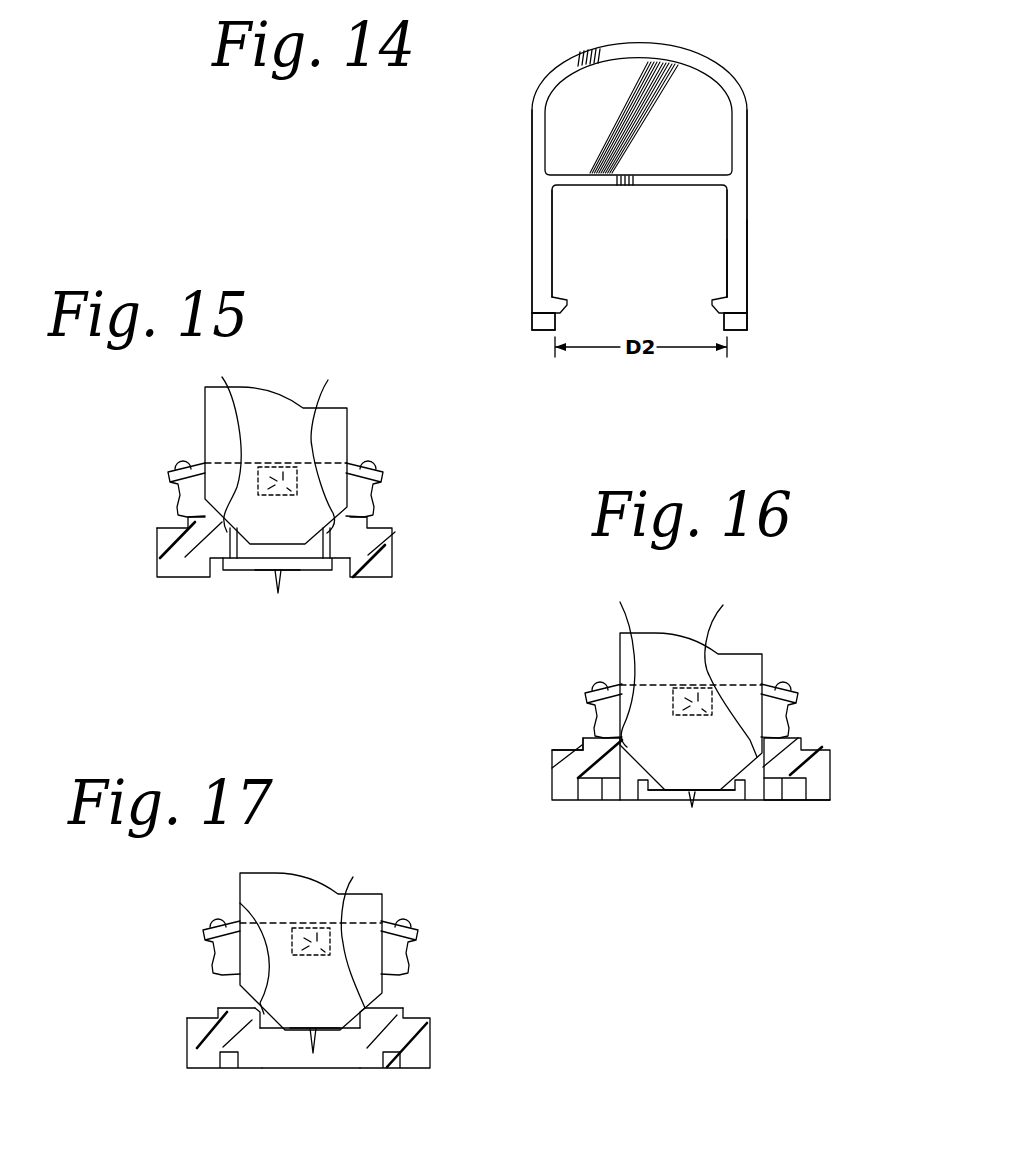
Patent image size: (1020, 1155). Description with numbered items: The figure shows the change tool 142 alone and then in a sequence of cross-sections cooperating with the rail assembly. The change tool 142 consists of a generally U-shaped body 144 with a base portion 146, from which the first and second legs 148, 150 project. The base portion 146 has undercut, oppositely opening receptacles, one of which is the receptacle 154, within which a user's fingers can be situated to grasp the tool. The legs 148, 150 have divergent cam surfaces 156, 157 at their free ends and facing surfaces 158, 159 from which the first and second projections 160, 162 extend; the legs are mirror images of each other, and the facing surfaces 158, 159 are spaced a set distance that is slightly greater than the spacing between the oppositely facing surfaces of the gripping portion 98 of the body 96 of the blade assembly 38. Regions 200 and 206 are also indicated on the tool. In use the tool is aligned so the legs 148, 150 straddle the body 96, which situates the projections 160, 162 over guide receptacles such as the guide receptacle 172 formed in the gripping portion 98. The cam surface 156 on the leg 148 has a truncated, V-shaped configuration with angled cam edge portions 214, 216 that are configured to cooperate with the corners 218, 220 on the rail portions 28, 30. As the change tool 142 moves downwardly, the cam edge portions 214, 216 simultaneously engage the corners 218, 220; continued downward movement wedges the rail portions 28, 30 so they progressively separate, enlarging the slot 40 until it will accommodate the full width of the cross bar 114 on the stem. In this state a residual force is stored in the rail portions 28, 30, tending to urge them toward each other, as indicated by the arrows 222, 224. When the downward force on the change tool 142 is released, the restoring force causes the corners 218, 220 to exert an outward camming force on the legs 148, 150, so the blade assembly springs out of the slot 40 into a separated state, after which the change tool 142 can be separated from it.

In FIG. 14, the change tool 142 is at (745, 223).
In FIG. 14, the U-shaped body 144 is at (742, 88).
In FIG. 14, the base portion 146 is at (567, 93).
In FIG. 14, the first leg 148 is at (747, 285).
In FIG. 15, the first leg 148 is at (323, 447).
In FIG. 16, the first leg 148 is at (717, 670).
In FIG. 17, the first leg 148 is at (355, 940).
In FIG. 14, the second leg 150 is at (537, 278).
In FIG. 14, the receptacle 154 is at (697, 79).
In FIG. 14, the cam surface 156 is at (740, 333).
In FIG. 15, the cam surface 156 is at (192, 520).
In FIG. 16, the cam surface 156 is at (577, 775).
In FIG. 17, the cam surface 156 is at (257, 1000).
In FIG. 14, the cam surface 157 is at (552, 333).
In FIG. 14, the facing surface 158 is at (717, 248).
In FIG. 14, the facing surface 159 is at (557, 210).
In FIG. 14, the first projection 160 is at (713, 300).
In FIG. 14, the second projection 162 is at (568, 300).
In FIG. 14, the leg recess 200 is at (723, 297).
In FIG. 14, the leg recess 206 is at (560, 297).
In FIG. 15, the rail portion 28 is at (190, 553).
In FIG. 16, the rail portion 28 is at (597, 773).
In FIG. 17, the rail portion 28 is at (230, 1042).
In FIG. 15, the rail portion 30 is at (373, 528).
In FIG. 16, the rail portion 30 is at (793, 757).
In FIG. 17, the rail portion 30 is at (420, 1027).
In FIG. 15, the blade assembly 38 is at (283, 582).
In FIG. 16, the blade assembly 38 is at (688, 800).
In FIG. 17, the blade assembly 38 is at (310, 1040).
In FIG. 15, the slot 40 is at (273, 573).
In FIG. 16, the slot 40 is at (755, 760).
In FIG. 17, the slot 40 is at (358, 1043).
In FIG. 15, the body 96 is at (205, 463).
In FIG. 16, the body 96 is at (620, 685).
In FIG. 17, the body 96 is at (223, 967).
In FIG. 15, the gripping portion 98 is at (353, 463).
In FIG. 16, the gripping portion 98 is at (763, 687).
In FIG. 17, the gripping portion 98 is at (407, 963).
In FIG. 15, the cross bar 114 is at (235, 567).
In FIG. 16, the cross bar 114 is at (647, 787).
In FIG. 17, the cross bar 114 is at (277, 1027).
In FIG. 15, the guide receptacle 172 is at (280, 467).
In FIG. 16, the guide receptacle 172 is at (693, 687).
In FIG. 17, the guide receptacle 172 is at (317, 930).
In FIG. 15, the cam edge portion 214 is at (225, 533).
In FIG. 16, the cam edge portion 214 is at (622, 745).
In FIG. 17, the cam edge portion 214 is at (247, 1003).
In FIG. 15, the cam edge portion 216 is at (328, 537).
In FIG. 16, the cam edge portion 216 is at (747, 767).
In FIG. 17, the cam edge portion 216 is at (367, 1000).
In FIG. 15, the corner 218 is at (222, 377).
In FIG. 16, the corner 218 is at (620, 602).
In FIG. 17, the corner 218 is at (240, 903).
In FIG. 15, the corner 220 is at (328, 380).
In FIG. 16, the corner 220 is at (723, 605).
In FIG. 17, the corner 220 is at (353, 877).
In FIG. 16, the arrow 222 is at (543, 760).
In FIG. 16, the arrow 224 is at (833, 758).